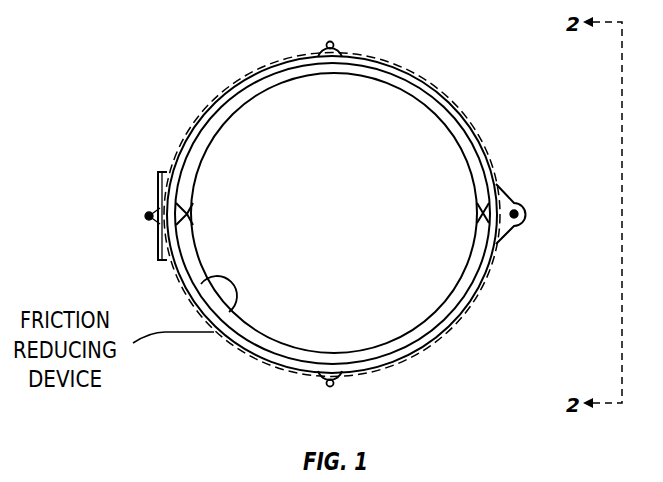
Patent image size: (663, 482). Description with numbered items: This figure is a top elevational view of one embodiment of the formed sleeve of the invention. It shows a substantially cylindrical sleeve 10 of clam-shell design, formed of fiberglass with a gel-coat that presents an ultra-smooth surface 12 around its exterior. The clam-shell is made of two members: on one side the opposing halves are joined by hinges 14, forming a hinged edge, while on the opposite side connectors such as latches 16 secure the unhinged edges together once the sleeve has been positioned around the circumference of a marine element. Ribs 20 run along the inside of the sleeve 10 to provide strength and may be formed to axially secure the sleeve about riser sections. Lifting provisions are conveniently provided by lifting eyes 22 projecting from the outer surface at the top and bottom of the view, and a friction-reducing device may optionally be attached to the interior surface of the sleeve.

The sleeve 10 is at (464, 98).
The ultra-smooth surface 12 is at (451, 339).
The hinge 14 is at (147, 219).
The latch 16 is at (515, 198).
The rib 20 is at (385, 80).
The lifting eye 22 is at (343, 44).